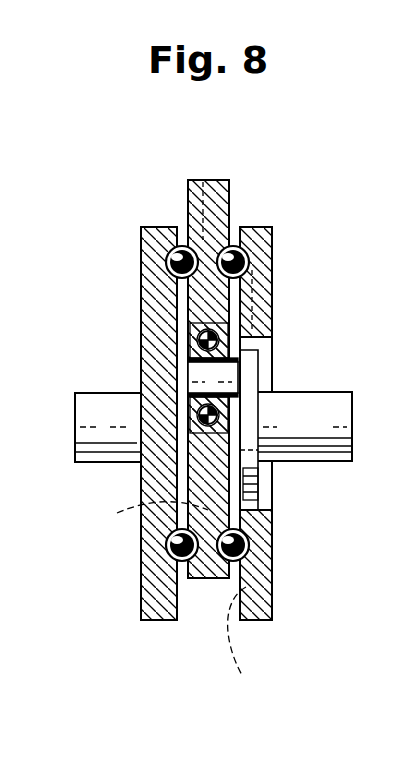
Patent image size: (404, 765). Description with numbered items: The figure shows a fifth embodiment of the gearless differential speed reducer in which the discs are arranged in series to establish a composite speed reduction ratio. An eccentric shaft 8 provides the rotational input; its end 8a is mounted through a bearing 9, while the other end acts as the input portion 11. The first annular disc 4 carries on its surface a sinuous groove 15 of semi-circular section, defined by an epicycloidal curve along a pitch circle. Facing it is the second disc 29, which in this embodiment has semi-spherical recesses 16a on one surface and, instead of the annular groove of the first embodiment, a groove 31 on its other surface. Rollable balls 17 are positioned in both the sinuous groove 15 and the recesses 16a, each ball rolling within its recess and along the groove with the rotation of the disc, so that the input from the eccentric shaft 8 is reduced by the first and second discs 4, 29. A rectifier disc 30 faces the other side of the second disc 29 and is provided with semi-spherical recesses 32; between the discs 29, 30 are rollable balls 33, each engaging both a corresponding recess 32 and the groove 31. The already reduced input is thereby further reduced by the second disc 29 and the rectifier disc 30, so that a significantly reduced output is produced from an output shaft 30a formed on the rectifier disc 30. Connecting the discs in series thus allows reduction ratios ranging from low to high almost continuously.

The rectifier disc 30 is at (145, 280).
The output shaft 30a is at (90, 410).
The semi-spherical recesses 32 is at (185, 246).
The semi-spherical recesses 16a is at (234, 246).
The bearing 9 is at (240, 358).
The end of eccentric shaft 8a is at (225, 374).
The eccentric shaft 8 is at (292, 465).
The input portion 11 is at (318, 432).
The first annular disc 4 is at (262, 613).
The second disc 29 is at (213, 578).
The groove 31 is at (147, 514).
The rollable balls 33 is at (167, 550).
The rollable balls 17 is at (247, 540).
The sinuous groove 15 is at (253, 647).